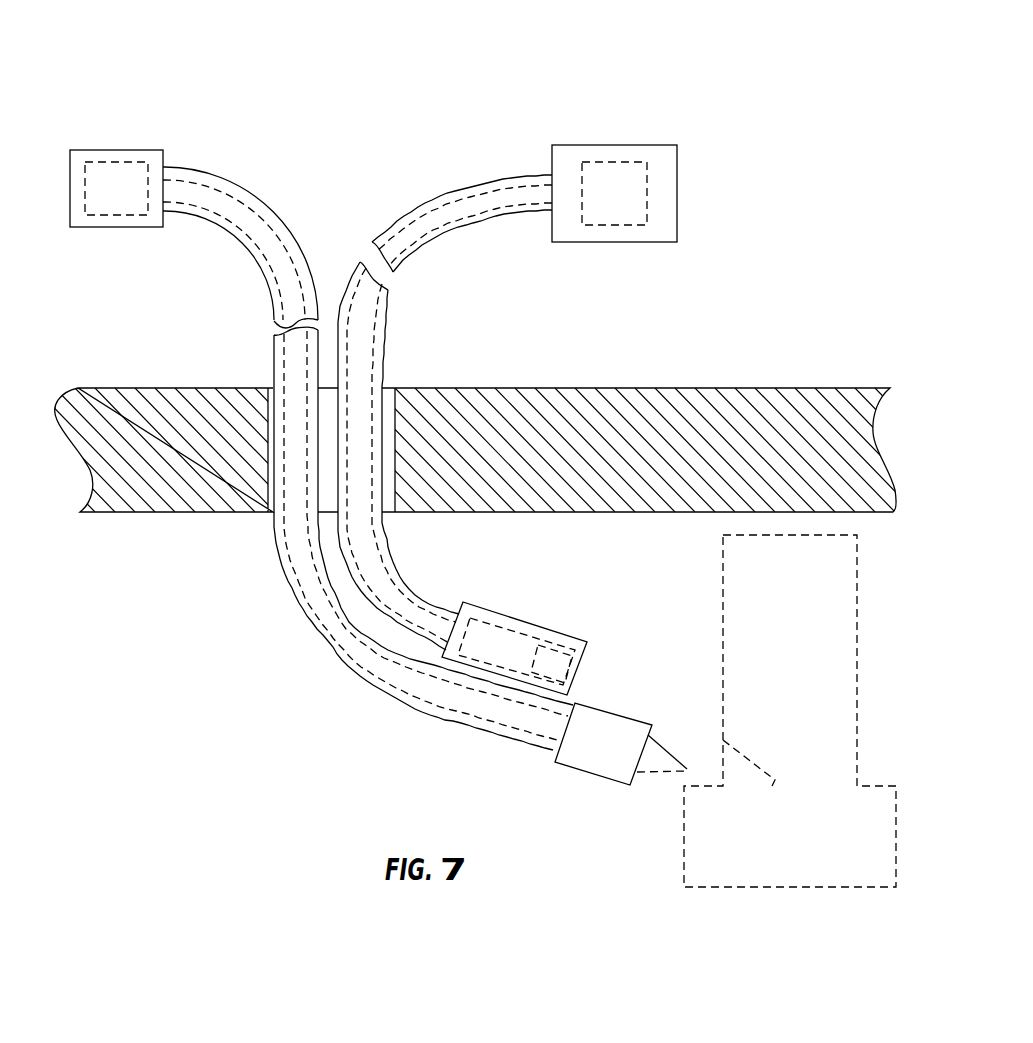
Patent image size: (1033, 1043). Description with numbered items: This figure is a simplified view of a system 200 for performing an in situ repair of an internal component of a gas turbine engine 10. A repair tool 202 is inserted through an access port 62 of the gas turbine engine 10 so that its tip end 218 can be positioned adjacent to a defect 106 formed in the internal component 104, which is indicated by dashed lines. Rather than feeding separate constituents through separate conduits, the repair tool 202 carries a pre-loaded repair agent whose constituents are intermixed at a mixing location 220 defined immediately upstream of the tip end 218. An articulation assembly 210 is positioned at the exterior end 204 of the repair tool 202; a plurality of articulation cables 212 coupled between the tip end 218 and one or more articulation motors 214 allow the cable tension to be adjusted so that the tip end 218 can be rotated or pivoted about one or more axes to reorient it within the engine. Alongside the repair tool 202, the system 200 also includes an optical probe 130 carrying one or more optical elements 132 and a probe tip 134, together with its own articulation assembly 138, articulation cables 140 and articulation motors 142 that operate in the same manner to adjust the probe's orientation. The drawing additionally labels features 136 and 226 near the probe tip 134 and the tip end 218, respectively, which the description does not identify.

The system 200 is at (812, 92).
The gas turbine engine 10 is at (785, 388).
The access port 62 is at (383, 388).
The articulation assembly 210 is at (118, 153).
The articulation motor 214 is at (115, 216).
The exterior end 204 is at (165, 168).
The articulation cables 212 is at (255, 243).
The repair tool 202 is at (365, 705).
The articulation assembly 138 is at (610, 160).
The articulation motor 142 is at (648, 200).
The articulation cables 140 is at (475, 192).
The optical probe 130 is at (418, 578).
The optical elements 132 is at (508, 625).
The probe tip 134 is at (559, 628).
The terminal 136 is at (563, 657).
The mixing location 220 is at (620, 760).
The tip end 218 is at (687, 770).
The contact 226 is at (661, 766).
The internal component 104 is at (886, 712).
The defect 106 is at (753, 758).